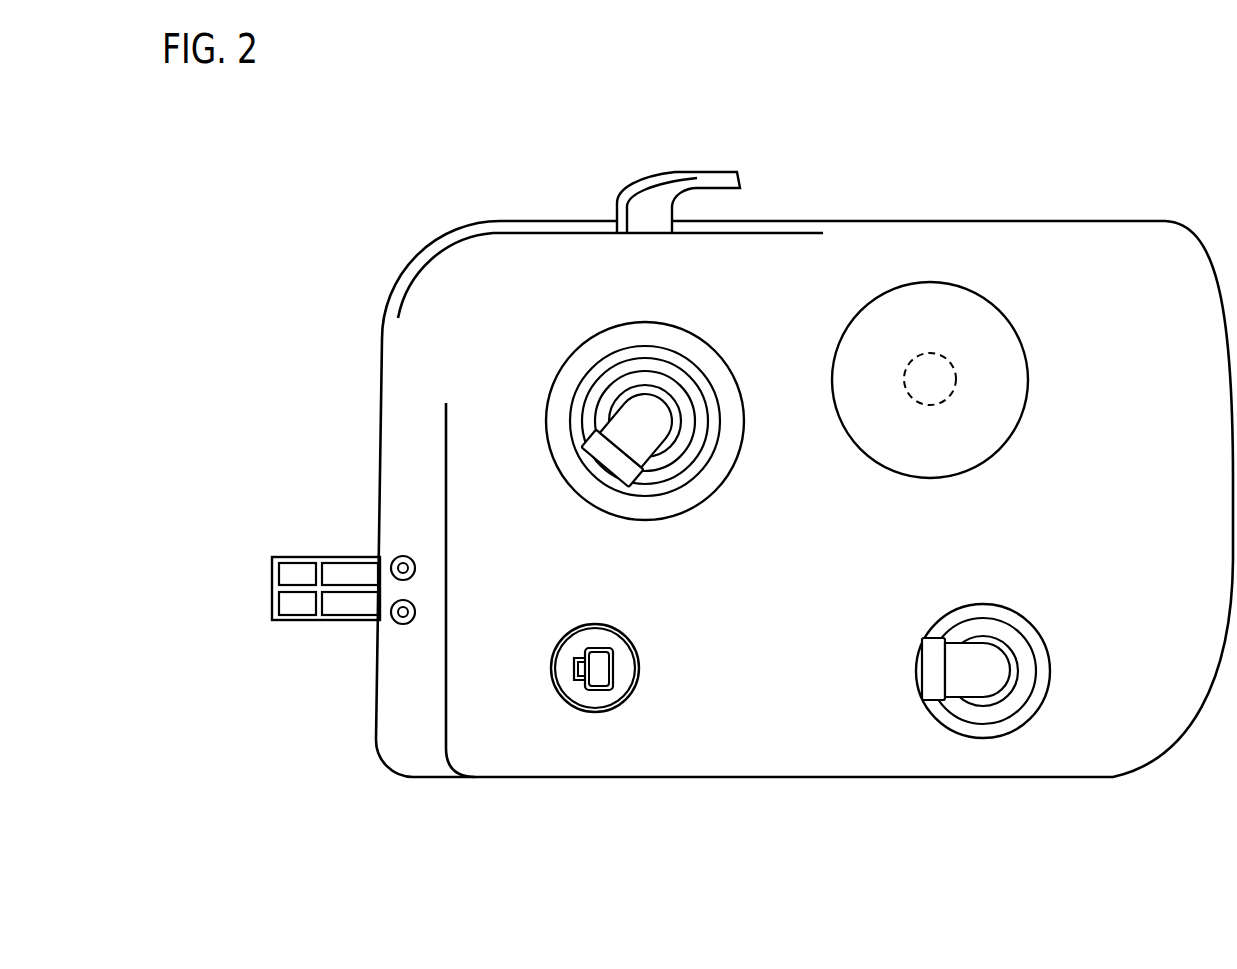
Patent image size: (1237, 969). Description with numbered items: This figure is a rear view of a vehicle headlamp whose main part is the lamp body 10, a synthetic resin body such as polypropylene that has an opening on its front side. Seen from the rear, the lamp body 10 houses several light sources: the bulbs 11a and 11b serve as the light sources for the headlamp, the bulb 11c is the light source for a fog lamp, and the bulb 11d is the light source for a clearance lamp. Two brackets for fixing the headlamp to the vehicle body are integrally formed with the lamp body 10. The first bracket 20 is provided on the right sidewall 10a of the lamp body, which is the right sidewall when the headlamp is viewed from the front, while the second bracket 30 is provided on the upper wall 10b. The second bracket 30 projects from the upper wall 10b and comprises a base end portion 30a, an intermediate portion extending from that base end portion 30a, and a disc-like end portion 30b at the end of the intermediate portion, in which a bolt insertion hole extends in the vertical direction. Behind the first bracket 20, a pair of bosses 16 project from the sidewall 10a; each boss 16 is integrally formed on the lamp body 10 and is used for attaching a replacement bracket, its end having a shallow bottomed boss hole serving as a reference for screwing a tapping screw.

The lamp body 10 is at (428, 362).
The right sidewall 10a is at (383, 473).
The upper wall 10b is at (740, 227).
The bulb 11a is at (636, 410).
The bulb 11b is at (929, 352).
The bulb 11c is at (985, 685).
The bulb 11d is at (595, 690).
The bosses 16 is at (392, 558).
The first bracket 20 is at (297, 624).
The second bracket 30 is at (680, 170).
The base end portion 30a is at (627, 195).
The end portion 30b is at (728, 170).